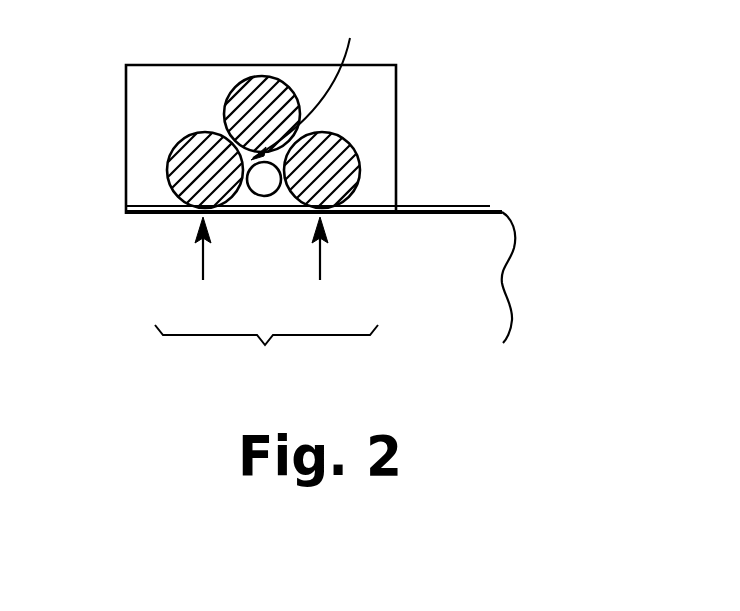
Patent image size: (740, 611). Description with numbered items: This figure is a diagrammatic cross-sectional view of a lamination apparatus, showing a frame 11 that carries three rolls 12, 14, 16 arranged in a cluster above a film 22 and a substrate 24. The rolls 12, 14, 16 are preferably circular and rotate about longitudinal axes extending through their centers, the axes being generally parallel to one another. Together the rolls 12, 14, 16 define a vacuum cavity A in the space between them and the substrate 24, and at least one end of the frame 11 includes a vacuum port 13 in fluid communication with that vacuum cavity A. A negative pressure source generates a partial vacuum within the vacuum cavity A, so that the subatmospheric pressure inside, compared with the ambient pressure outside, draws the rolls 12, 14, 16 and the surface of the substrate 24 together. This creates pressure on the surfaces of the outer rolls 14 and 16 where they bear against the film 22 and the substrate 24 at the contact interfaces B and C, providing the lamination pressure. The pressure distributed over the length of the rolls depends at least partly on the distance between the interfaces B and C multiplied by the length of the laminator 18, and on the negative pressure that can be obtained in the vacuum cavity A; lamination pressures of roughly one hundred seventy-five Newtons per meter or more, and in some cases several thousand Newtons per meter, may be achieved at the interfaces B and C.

The frame 11 is at (148, 109).
The roll 12 is at (260, 102).
The vacuum port 13 is at (260, 184).
The roll 14 is at (327, 163).
The roll 16 is at (190, 200).
The laminator 18 is at (266, 354).
The film 22 is at (452, 204).
The substrate 24 is at (480, 276).
The vacuum cavity A is at (307, 83).
The contact interface B is at (205, 260).
The contact interface C is at (322, 260).